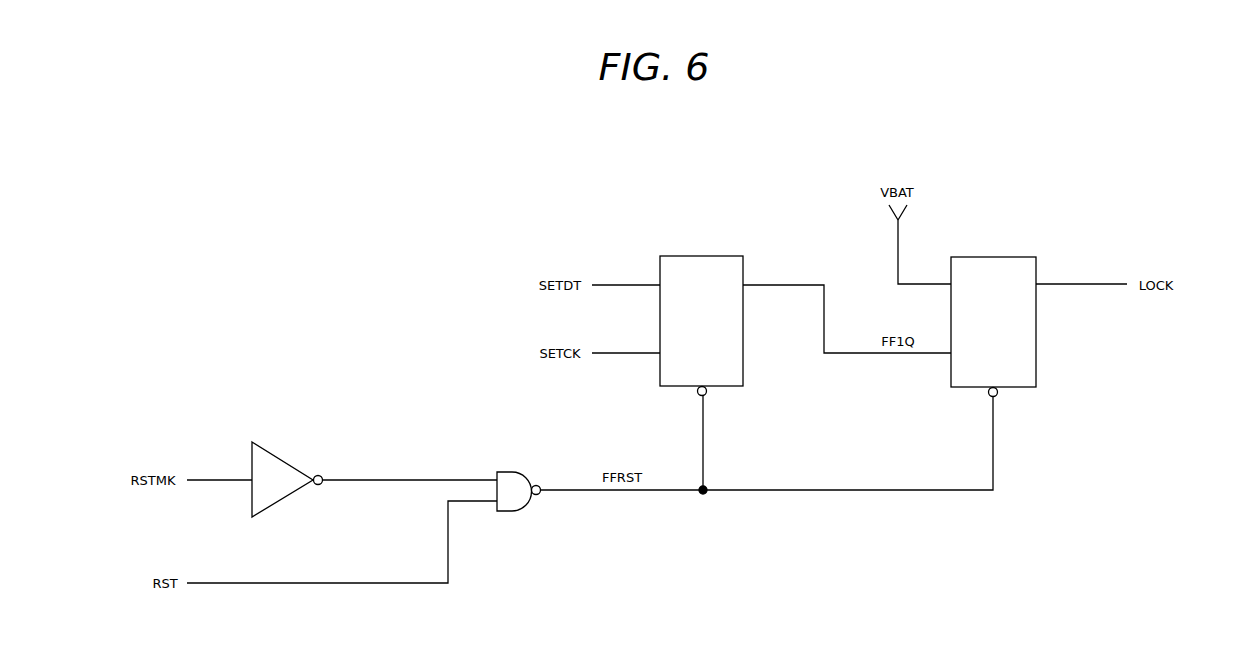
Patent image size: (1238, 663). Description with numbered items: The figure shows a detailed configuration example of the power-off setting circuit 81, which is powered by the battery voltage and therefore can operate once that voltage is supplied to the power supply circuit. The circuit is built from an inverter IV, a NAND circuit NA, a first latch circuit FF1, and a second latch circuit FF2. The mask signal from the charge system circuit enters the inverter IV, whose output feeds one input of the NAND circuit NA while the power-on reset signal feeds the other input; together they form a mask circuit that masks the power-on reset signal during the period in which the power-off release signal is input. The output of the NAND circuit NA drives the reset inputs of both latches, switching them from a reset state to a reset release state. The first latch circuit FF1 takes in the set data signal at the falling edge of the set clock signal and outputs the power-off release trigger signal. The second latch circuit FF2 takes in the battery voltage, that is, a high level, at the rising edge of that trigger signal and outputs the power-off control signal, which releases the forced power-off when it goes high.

The power-off setting circuit 81 is at (1130, 157).
The first latch circuit FF1 is at (702, 256).
The second latch circuit FF2 is at (993, 257).
The inverter IV is at (281, 456).
The NAND circuit NA is at (508, 470).